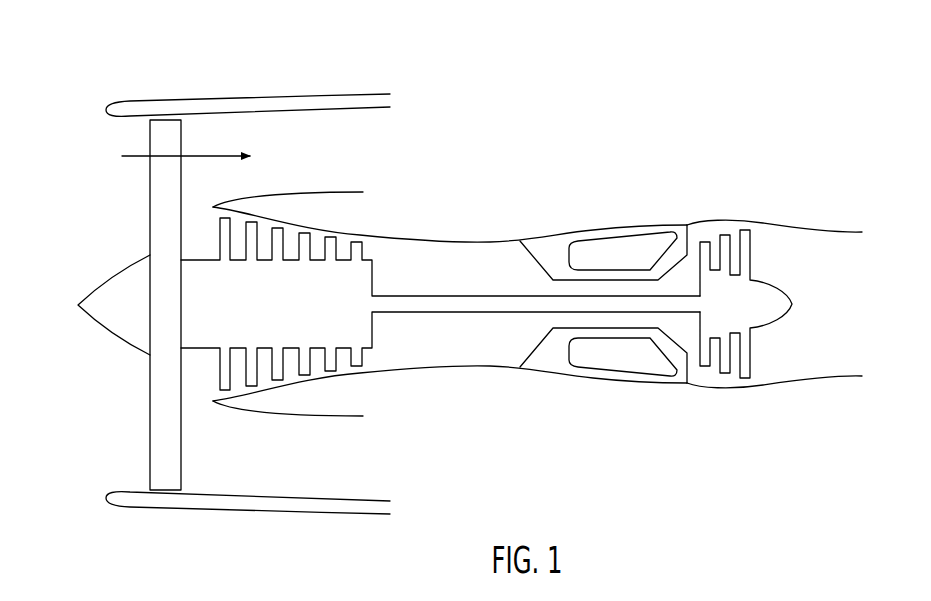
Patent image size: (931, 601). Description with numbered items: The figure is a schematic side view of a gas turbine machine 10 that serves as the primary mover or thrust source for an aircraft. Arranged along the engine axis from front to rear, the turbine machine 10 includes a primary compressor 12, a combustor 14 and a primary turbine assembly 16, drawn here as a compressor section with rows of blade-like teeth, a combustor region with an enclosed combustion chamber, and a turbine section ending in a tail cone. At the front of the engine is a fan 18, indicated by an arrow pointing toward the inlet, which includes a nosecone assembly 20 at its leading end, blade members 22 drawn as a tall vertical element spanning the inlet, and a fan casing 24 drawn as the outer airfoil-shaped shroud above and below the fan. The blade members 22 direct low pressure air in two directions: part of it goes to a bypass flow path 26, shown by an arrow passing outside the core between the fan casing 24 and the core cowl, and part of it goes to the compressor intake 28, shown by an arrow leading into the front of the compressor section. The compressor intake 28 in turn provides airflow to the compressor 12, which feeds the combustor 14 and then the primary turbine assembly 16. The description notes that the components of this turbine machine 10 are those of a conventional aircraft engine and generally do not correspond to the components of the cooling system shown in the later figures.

The gas turbine machine 10 is at (618, 130).
The primary compressor 12 is at (308, 295).
The combustor 14 is at (612, 255).
The primary turbine assembly 16 is at (738, 303).
The fan 18 is at (98, 184).
The nosecone assembly 20 is at (113, 322).
The blade members 22 is at (167, 473).
The fan casing 24 is at (252, 100).
The bypass flow path 26 is at (215, 156).
The compressor intake 28 is at (218, 241).